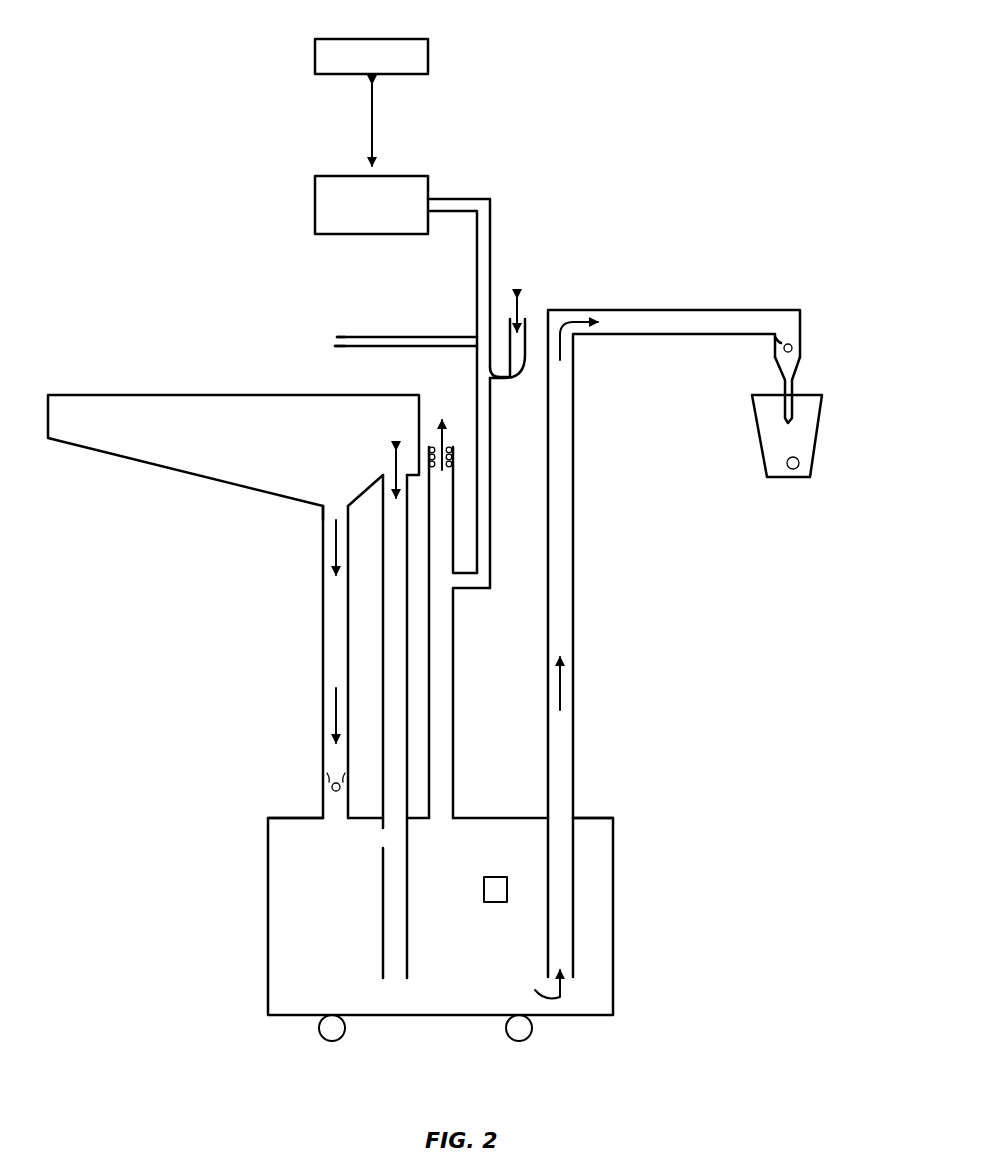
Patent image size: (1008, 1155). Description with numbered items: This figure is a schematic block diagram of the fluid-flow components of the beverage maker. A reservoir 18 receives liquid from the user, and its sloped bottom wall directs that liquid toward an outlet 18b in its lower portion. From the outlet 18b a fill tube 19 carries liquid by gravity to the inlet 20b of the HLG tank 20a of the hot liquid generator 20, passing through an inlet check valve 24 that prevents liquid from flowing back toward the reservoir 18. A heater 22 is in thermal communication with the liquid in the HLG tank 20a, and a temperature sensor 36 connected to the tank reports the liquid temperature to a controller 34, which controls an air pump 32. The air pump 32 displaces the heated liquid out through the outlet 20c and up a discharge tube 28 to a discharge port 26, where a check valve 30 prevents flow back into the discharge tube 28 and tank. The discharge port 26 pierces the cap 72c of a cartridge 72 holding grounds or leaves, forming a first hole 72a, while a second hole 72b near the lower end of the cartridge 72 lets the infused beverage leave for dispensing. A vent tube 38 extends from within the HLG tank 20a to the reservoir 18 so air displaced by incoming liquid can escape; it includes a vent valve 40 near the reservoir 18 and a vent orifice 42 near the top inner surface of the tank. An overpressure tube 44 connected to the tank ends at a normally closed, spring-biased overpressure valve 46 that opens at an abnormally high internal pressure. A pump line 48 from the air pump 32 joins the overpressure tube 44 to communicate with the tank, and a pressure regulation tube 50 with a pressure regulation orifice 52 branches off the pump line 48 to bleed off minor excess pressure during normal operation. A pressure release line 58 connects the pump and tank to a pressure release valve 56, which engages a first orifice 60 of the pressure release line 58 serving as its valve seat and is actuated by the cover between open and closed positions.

The reservoir 18 is at (200, 465).
The outlet 18b is at (320, 508).
The fill tube 19 is at (323, 652).
The hot liquid generator 20 is at (468, 1017).
The HLG tank 20a is at (500, 960).
The inlet 20b is at (323, 820).
The outlet 20c is at (575, 814).
The heater 22 is at (520, 1041).
The inlet check valve 24 is at (332, 789).
The discharge port 26 is at (783, 405).
The discharge tube 28 is at (578, 520).
The check valve 30 is at (793, 348).
The air pump 32 is at (394, 176).
The controller 34 is at (394, 39).
The temperature sensor 36 is at (480, 880).
The vent tube 38 is at (410, 694).
The vent valve 40 is at (390, 468).
The vent orifice 42 is at (378, 840).
The overpressure tube 44 is at (455, 660).
The overpressure valve 46 is at (437, 435).
The pump line 48 is at (490, 238).
The pressure regulation tube 50 is at (405, 337).
The pressure regulation orifice 52 is at (335, 342).
The pressure release valve 56 is at (523, 305).
The pressure release line 58 is at (525, 360).
The first orifice 60 is at (508, 336).
The cartridge 72 is at (822, 428).
The first hole 72a is at (783, 393).
The second hole 72b is at (800, 465).
The cap 72c is at (807, 393).